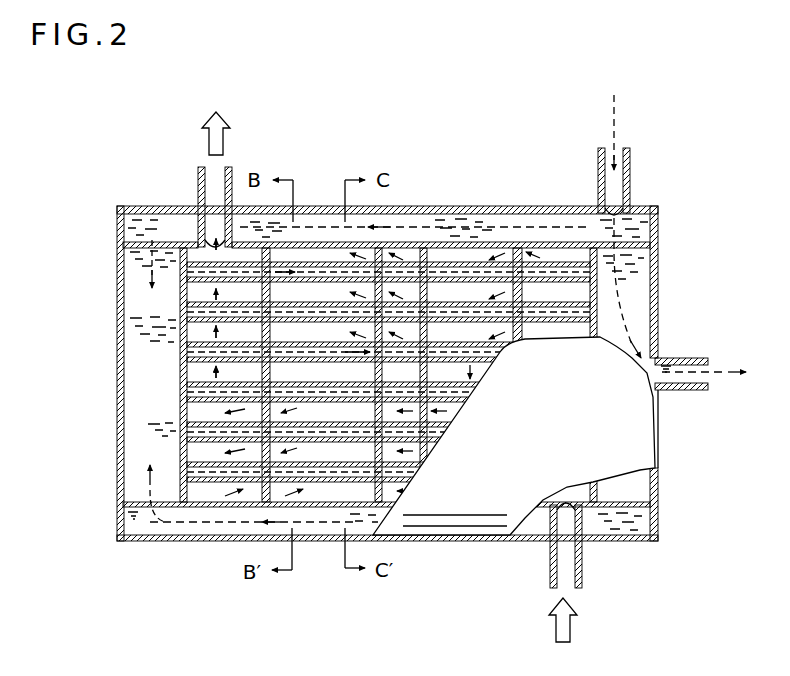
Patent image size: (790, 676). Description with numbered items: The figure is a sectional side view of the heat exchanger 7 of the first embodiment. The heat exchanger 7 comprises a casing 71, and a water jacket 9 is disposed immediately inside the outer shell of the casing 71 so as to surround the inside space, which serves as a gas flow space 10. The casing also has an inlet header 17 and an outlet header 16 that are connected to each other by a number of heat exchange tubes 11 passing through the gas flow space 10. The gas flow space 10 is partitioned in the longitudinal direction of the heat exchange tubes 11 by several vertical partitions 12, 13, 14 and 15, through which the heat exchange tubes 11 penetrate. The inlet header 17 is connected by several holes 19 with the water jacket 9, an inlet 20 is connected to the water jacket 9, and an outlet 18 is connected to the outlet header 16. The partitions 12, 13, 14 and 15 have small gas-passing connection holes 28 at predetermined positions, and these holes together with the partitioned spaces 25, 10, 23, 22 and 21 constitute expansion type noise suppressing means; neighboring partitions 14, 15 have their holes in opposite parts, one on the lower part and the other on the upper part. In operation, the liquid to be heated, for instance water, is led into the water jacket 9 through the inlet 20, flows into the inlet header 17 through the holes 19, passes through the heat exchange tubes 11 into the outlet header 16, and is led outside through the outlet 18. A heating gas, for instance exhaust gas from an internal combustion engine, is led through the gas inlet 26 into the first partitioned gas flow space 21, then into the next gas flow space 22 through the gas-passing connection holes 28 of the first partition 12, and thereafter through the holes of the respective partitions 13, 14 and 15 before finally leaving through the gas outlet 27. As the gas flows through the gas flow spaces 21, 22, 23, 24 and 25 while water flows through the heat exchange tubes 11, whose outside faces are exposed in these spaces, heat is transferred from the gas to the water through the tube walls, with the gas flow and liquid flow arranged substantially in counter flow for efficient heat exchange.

The heat exchanger 7 is at (514, 150).
The water jacket 9 is at (392, 218).
The gas flow space 10 is at (300, 252).
The heat exchange tubes 11 is at (568, 256).
The partition 12 is at (527, 247).
The partition 13 is at (470, 256).
The partition 14 is at (360, 492).
The partition 15 is at (248, 504).
The outlet header 16 is at (660, 283).
The inlet header 17 is at (133, 456).
The outlet 18 is at (692, 358).
The holes 19 is at (145, 240).
The inlet 20 is at (632, 165).
The first partitioned gas flow space 21 is at (640, 266).
The partitioned gas flow space 22 is at (476, 255).
The partitioned gas flow space 23 is at (411, 247).
The gas flow space 24 is at (330, 494).
The partitioned gas flow space 25 is at (207, 494).
The gas inlet 26 is at (583, 575).
The gas outlet 27 is at (199, 182).
The gas-passing connection holes 28 is at (600, 337).
The casing 71 is at (122, 338).